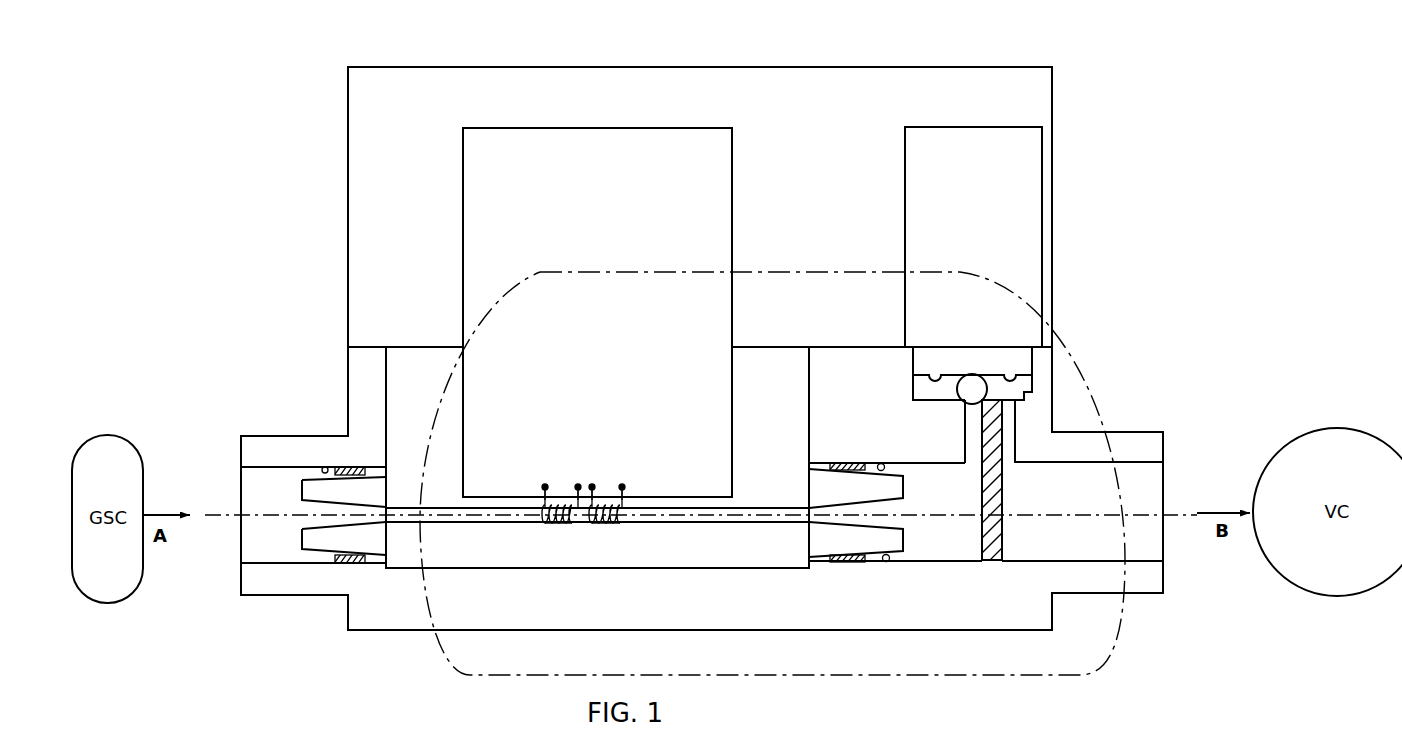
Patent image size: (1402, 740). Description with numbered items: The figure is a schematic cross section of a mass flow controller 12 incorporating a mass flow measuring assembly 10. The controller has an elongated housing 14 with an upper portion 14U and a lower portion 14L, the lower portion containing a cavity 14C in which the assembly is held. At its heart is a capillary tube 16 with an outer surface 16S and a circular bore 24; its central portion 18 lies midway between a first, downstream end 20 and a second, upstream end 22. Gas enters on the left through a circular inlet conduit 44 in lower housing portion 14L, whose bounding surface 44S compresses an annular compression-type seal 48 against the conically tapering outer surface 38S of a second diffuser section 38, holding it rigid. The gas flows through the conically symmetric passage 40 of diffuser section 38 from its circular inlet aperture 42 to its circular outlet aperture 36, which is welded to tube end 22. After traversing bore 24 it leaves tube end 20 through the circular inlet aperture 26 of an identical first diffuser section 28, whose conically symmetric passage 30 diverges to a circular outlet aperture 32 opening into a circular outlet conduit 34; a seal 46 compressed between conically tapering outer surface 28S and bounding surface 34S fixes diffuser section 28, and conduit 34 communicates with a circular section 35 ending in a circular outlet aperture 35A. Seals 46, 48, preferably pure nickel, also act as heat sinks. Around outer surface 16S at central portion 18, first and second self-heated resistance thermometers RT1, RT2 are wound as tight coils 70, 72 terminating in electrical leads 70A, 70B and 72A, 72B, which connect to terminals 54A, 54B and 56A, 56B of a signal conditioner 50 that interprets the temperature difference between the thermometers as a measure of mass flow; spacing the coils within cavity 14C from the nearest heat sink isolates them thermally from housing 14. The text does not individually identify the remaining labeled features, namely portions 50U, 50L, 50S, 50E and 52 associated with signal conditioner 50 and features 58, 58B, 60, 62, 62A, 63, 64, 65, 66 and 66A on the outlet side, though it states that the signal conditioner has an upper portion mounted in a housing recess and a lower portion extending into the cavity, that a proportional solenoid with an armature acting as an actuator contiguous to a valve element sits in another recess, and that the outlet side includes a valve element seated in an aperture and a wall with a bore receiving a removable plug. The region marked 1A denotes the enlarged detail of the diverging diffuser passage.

The mass flow measuring assembly 10 is at (740, 548).
The mass flow controller 12 is at (536, 54).
The elongated housing 14 is at (781, 66).
The upper portion 14U is at (347, 196).
The lower portion 14L is at (347, 388).
The cavity 14C is at (768, 357).
The capillary tube 16 is at (650, 525).
The outer surface 16S is at (672, 500).
The central portion 18 is at (562, 522).
The first (downstream) end 20 is at (808, 508).
The second (upstream) end 22 is at (394, 506).
The circular bore 24 is at (517, 510).
The circular inlet aperture 26 is at (808, 523).
The first diffuser section 28 is at (870, 562).
The conically tapering outer surface 28S is at (870, 468).
The conically symmetric passage 30 is at (862, 514).
The circular outlet aperture 32 is at (905, 524).
The circular outlet conduit 34 is at (960, 563).
The bounding surface 34S is at (884, 466).
The circular section 35 is at (972, 430).
The circular outlet aperture 35A is at (968, 402).
The circular outlet aperture 36 is at (380, 522).
The second diffuser section 38 is at (310, 555).
The conically tapering outer surface 38S is at (306, 473).
The conically symmetric passage 40 is at (305, 516).
The circular inlet aperture 42 is at (300, 528).
The circular inlet conduit 44 is at (272, 552).
The bounding surface 44S is at (327, 466).
The annular compression-type seal 46 is at (850, 468).
The annular compression-type seal 48 is at (350, 466).
The signal conditioner 50 is at (582, 125).
The sensor block upper wall 50U is at (462, 184).
The sensor block lower portion 50L is at (734, 418).
The sensor block bottom surface 50S is at (688, 497).
The sensor block edge 50E is at (733, 497).
The sensor block side wall 52 is at (462, 215).
The terminal 54A is at (545, 486).
The terminal 54B is at (578, 486).
The terminal 56A is at (592, 486).
The terminal 56B is at (622, 486).
The valve stem 58 is at (1003, 483).
The valve stem base 58B is at (982, 505).
The valve member 60 is at (1003, 530).
The actuator block 62 is at (995, 125).
The actuator block lower surface 62A is at (1015, 345).
The actuator block side wall 63 is at (905, 181).
The valve ball 64 is at (972, 373).
The valve seat 65 is at (1036, 383).
The outlet passage 66 is at (1062, 540).
The outlet channel 66A is at (1012, 405).
The coil 70 is at (568, 526).
The electrical lead 70A is at (545, 492).
The electrical lead 70B is at (575, 492).
The coil 72 is at (603, 526).
The electrical lead 72A is at (594, 492).
The electrical lead 72B is at (624, 492).
The first (upstream) self-heated resistance thermometer RT1 is at (537, 530).
The second (downstream) self-heated resistance thermometer RT2 is at (595, 530).
The sectional region 1A is at (774, 473).